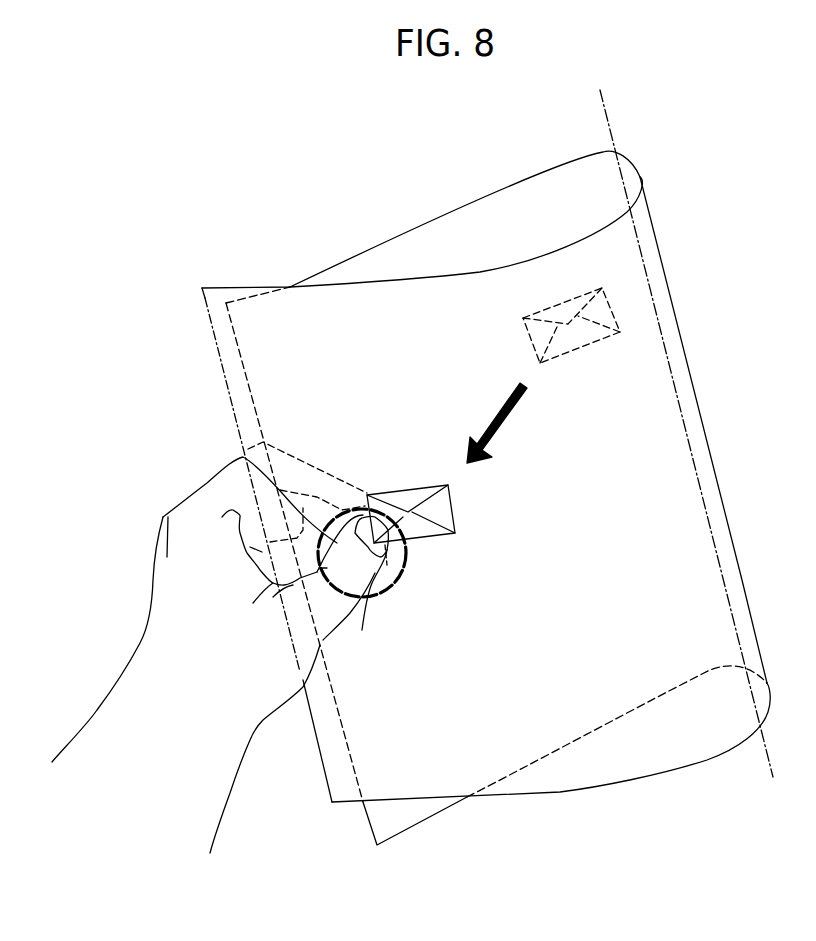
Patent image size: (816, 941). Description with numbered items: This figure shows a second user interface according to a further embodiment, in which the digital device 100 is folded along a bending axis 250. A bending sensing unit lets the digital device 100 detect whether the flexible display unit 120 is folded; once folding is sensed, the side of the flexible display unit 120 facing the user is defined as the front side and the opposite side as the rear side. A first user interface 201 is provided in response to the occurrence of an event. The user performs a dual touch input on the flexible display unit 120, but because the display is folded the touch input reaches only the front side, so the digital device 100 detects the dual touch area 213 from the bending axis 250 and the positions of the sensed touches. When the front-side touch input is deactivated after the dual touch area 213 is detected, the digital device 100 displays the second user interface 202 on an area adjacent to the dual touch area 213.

The digital device 100 is at (210, 322).
The flexible display unit 120 is at (692, 437).
The first user interface 201 is at (600, 310).
The moved object icon 202 is at (455, 533).
The dual touch area 213 is at (243, 457).
The bending axis 250 is at (608, 122).